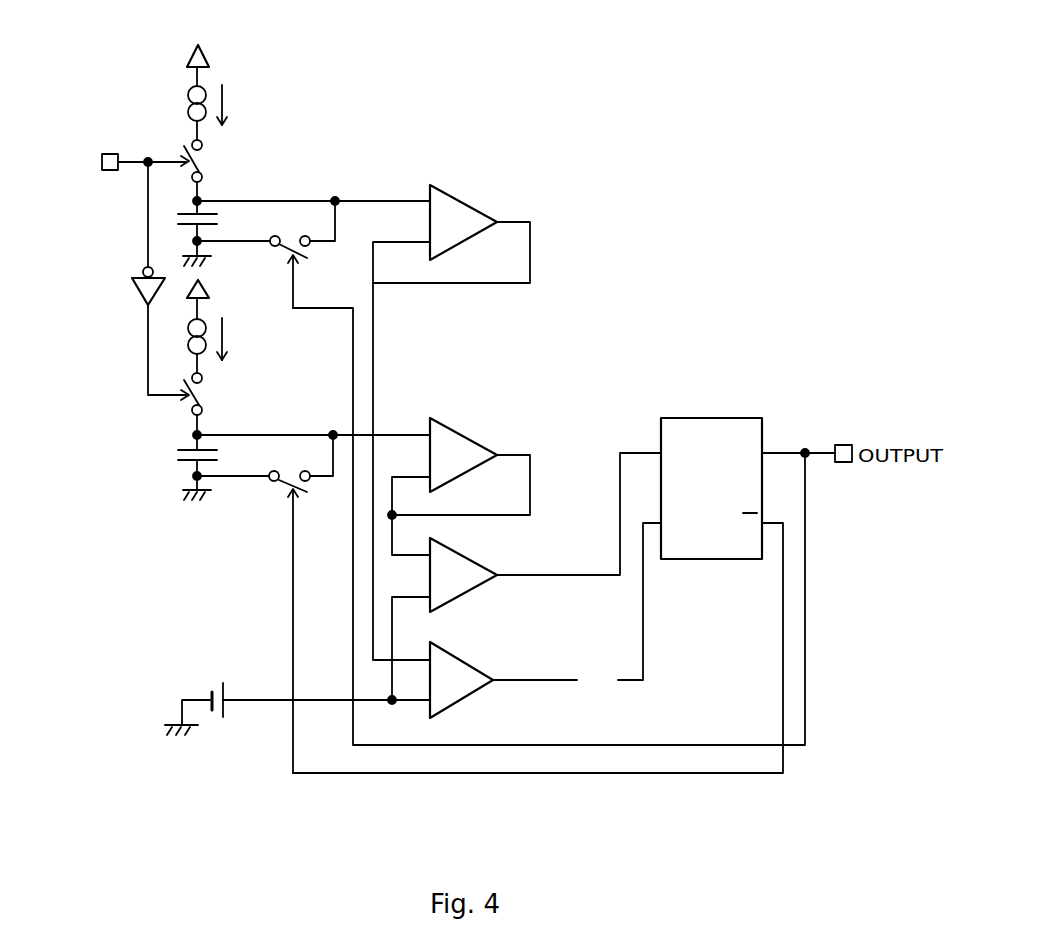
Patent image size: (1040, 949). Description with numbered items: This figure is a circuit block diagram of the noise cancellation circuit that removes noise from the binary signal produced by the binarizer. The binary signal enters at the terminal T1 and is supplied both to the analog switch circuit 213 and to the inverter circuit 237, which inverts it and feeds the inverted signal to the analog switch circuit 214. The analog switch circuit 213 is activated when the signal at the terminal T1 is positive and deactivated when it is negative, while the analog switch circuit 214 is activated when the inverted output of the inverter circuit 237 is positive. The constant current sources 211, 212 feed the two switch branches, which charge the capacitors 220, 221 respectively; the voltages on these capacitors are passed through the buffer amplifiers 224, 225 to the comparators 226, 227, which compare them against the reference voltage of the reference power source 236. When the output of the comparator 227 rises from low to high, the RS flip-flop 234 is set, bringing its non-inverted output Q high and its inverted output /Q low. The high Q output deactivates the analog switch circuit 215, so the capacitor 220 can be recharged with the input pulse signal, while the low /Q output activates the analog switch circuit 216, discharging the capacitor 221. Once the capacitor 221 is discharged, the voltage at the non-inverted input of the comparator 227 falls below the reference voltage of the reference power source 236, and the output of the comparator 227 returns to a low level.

The terminal T1 is at (110, 171).
The constant current source 211 is at (200, 85).
The constant current source 212 is at (204, 323).
The analog switch circuit 213 is at (193, 142).
The analog switch circuit 214 is at (205, 387).
The analog switch circuit 215 is at (313, 254).
The analog switch circuit 216 is at (278, 488).
The capacitor 220 is at (226, 212).
The capacitor 221 is at (168, 462).
The buffer amplifier 224 is at (465, 202).
The buffer amplifier 225 is at (465, 433).
The comparator 226 is at (463, 700).
The comparator 227 is at (462, 597).
The RS flip-flop 234 is at (727, 417).
The reference power source 236 is at (215, 722).
The inverter circuit 237 is at (144, 300).